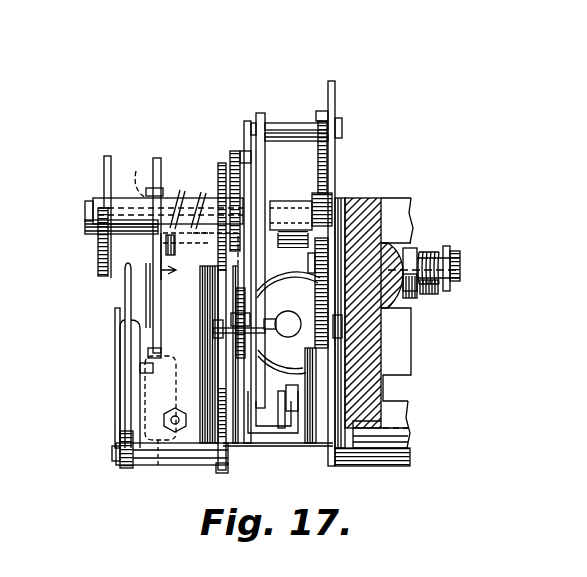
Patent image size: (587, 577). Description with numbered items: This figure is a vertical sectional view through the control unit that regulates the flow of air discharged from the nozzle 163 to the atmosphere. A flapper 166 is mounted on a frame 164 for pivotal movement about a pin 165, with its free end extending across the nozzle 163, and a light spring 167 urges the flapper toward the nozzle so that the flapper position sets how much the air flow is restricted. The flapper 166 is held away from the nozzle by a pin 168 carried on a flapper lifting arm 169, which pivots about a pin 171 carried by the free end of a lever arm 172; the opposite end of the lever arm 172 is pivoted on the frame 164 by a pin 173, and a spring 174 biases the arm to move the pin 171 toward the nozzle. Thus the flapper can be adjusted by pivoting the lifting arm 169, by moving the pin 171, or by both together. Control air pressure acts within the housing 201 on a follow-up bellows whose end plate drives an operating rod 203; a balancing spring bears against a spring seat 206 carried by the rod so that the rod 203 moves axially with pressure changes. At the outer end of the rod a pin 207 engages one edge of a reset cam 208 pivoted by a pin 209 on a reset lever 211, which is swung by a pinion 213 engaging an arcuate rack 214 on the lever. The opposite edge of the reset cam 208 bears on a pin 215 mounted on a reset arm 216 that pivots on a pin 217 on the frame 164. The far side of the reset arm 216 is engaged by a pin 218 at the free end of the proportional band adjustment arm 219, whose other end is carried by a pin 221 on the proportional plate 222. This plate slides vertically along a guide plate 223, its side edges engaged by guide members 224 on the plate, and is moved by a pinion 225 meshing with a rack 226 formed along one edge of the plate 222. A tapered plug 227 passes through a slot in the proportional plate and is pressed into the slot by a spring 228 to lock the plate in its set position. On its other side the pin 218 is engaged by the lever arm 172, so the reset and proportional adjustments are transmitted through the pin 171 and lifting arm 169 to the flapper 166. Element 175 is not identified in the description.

The nozzle 163 is at (167, 412).
The frame 164 is at (373, 338).
The pin 165 is at (165, 230).
The flapper 166 is at (138, 323).
The light spring 167 is at (157, 264).
The pin 168 is at (132, 362).
The flapper lifting arm 169 is at (112, 428).
The pin 171 is at (104, 443).
The lever arm 172 is at (212, 463).
The pin 173 is at (138, 175).
The spring 174 is at (172, 182).
The plate 175 is at (107, 347).
The housing 201 is at (378, 335).
The operating rod 203 is at (280, 303).
The spring seat 206 is at (292, 356).
The pin 207 is at (264, 321).
The reset cam 208 is at (255, 198).
The pin 209 is at (234, 148).
The reset lever 211 is at (236, 140).
The pinion 213 is at (210, 185).
The arcuate rack 214 is at (222, 158).
The pin 215 is at (213, 322).
The reset arm 216 is at (246, 426).
The pin 217 is at (279, 422).
The pin 218 is at (225, 315).
The proportional band adjustment arm 219 is at (252, 105).
The pin 221 is at (243, 118).
The proportional plate 222 is at (312, 103).
The guide plate 223 is at (327, 78).
The guide members 224 is at (334, 118).
The pinion 225 is at (324, 190).
The rack 226 is at (318, 146).
The tapered plug 227 is at (304, 252).
The spring 228 is at (418, 248).